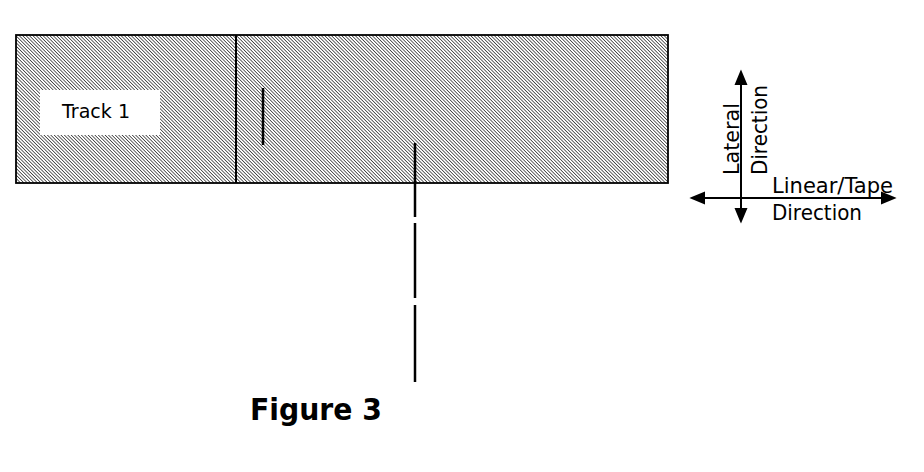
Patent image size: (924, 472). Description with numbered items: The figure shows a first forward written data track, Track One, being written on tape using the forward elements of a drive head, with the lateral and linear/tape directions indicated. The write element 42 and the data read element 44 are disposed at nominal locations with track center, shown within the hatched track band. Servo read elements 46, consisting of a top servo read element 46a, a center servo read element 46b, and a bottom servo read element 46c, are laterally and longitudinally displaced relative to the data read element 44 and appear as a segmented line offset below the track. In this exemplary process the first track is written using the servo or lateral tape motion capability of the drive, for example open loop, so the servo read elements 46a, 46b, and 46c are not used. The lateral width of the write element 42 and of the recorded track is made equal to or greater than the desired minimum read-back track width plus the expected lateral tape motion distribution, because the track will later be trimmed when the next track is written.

The write element 42 is at (236, 127).
The data read element 44 is at (264, 142).
The servo read elements 46 is at (420, 262).
The top servo read element 46a is at (414, 192).
The center servo read element 46b is at (415, 268).
The bottom servo read element 46c is at (415, 363).